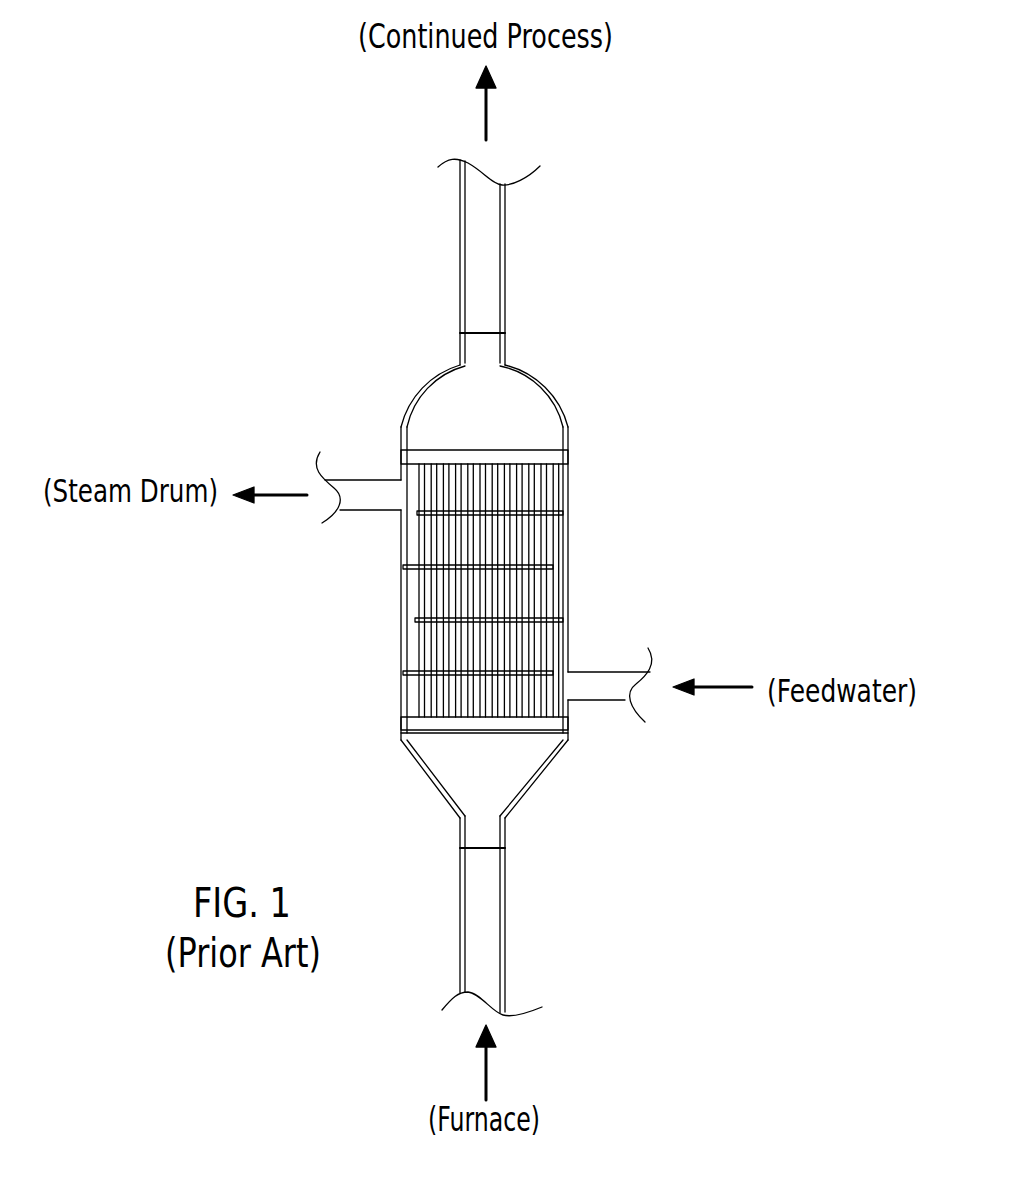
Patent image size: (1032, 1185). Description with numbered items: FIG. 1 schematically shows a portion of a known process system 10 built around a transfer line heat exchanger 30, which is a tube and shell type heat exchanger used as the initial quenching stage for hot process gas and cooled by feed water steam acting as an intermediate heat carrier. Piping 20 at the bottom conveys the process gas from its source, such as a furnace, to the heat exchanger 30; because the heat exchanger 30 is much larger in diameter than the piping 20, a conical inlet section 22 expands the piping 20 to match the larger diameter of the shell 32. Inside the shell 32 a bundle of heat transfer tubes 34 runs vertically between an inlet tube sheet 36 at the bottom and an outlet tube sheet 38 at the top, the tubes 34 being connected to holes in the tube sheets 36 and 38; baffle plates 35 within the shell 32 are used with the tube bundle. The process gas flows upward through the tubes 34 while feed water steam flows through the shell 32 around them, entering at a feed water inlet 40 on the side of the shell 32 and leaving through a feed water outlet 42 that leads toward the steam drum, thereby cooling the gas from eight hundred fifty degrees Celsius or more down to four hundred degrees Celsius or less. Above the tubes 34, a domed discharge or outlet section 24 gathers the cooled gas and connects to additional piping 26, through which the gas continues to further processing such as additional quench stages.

The heat exchange system 10 is at (288, 284).
The piping 20 is at (505, 935).
The inlet section 22 is at (520, 805).
The outlet section 24 is at (548, 381).
The additional piping 26 is at (505, 233).
The transfer line heat exchanger 30 is at (634, 512).
The shell 32 is at (568, 559).
The heat transfer tubes 34 is at (417, 647).
The baffles 35 is at (412, 568).
The inlet tube sheet 36 is at (401, 722).
The outlet tube sheet 38 is at (568, 458).
The inlet 40 is at (587, 702).
The outlet 42 is at (387, 480).